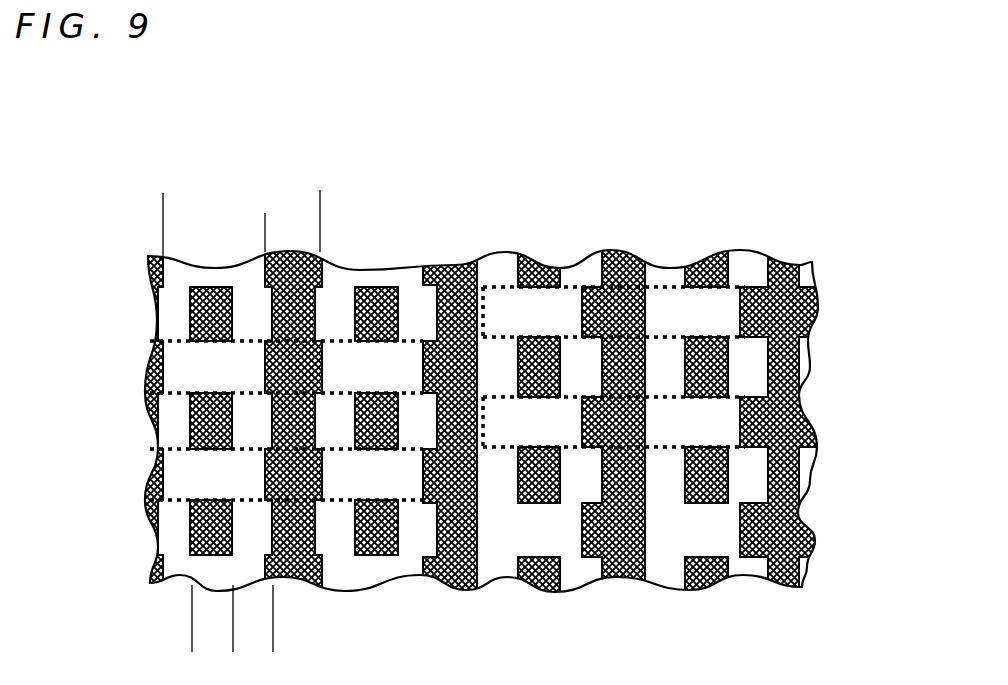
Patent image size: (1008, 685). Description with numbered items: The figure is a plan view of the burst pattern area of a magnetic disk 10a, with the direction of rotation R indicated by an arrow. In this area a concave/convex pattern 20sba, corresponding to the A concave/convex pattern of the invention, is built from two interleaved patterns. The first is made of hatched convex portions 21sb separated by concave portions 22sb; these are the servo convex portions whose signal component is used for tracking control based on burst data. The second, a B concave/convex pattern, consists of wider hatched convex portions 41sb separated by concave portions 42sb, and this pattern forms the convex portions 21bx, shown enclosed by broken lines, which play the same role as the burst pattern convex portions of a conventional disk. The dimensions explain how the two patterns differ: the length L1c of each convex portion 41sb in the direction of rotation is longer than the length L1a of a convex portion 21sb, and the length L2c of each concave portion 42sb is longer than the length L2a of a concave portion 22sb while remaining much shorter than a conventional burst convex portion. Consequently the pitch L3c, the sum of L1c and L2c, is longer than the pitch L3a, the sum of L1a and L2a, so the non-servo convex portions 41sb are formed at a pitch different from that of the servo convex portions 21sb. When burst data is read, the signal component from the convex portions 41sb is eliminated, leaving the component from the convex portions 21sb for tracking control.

The magnetic disk 10a is at (493, 189).
The concave/convex pattern 20sba is at (677, 213).
The convex portions 21bx is at (223, 372).
The convex portions 41sb is at (322, 365).
The concave portions 42sb is at (389, 358).
The convex portions 21sb is at (300, 550).
The concave portions 22sb is at (420, 544).
The length of convex portion 21sb L1a is at (242, 607).
The length of concave portion 22sb L2a is at (282, 629).
The pitch of convex portions 21sb L3a is at (264, 651).
The length of convex portion 41sb L1c is at (329, 244).
The length of concave portion 42sb L2c is at (256, 223).
The pitch of convex portions 41sb L3c is at (311, 201).
The direction of rotation R is at (703, 646).